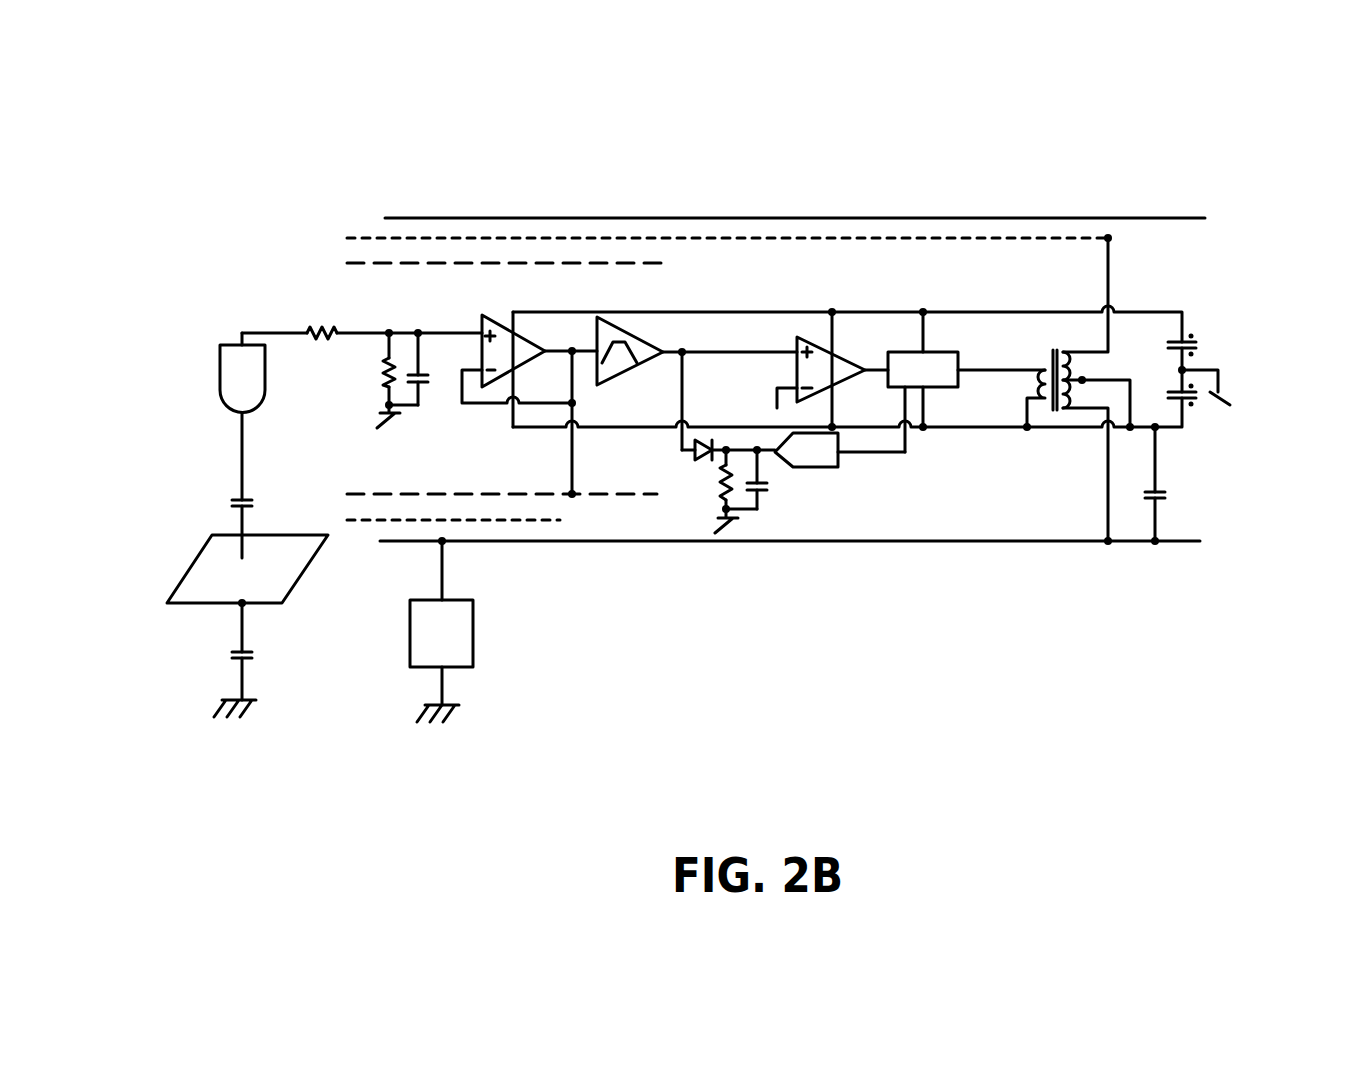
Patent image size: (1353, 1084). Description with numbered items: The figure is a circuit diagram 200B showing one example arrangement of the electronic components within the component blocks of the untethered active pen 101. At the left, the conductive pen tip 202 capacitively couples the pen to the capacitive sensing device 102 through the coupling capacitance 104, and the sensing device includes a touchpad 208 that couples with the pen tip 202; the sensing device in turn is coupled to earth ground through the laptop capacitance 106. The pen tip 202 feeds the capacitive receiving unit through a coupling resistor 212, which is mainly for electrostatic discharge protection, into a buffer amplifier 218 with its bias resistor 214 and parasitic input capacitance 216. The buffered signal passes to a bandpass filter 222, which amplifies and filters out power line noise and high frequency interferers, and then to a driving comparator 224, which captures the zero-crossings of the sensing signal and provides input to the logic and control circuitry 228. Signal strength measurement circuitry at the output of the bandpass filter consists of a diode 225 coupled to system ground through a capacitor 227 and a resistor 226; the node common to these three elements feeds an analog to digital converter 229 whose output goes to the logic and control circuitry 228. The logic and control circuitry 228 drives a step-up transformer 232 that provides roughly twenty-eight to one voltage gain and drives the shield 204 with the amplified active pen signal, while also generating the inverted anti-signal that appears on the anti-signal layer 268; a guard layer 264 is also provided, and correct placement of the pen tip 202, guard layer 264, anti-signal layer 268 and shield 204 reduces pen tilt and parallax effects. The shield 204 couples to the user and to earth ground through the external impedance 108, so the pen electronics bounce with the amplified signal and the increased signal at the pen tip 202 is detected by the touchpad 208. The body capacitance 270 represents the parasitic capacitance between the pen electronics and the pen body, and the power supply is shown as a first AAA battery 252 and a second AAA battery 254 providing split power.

The circuit diagram 200B is at (205, 141).
The untethered active pen 101 is at (1172, 208).
The capacitive sensing device 102 is at (178, 554).
The coupling capacitance C_PENTIP 104 is at (233, 503).
The capacitance C_LAPTOP 106 is at (233, 657).
The external impedance Z_EXT 108 is at (408, 660).
The pen tip 202 is at (258, 410).
The shield 204 is at (875, 543).
The touchpad 208 is at (260, 605).
The coupling resistor R1 212 is at (335, 338).
The bias resistor R2 214 is at (385, 387).
The parasitic input capacitance C2 216 is at (422, 390).
The buffer amplifier U1 218 is at (480, 325).
The bandpass filter U2 222 is at (630, 365).
The driving comparator U3 224 is at (797, 357).
The diode D1 225 is at (790, 400).
The resistor R3 226 is at (722, 486).
The capacitor C3 227 is at (765, 492).
The logic and control circuitry 228 is at (912, 352).
The analog to digital converter 229 is at (827, 468).
The step-up transformer T1 232 is at (1040, 367).
The first AAA battery 252 is at (1192, 340).
The second AAA battery 254 is at (1195, 395).
The guard layer 264 is at (697, 267).
The anti-signal layer 268 is at (1027, 238).
The capacitance C_BODY 270 is at (1160, 498).